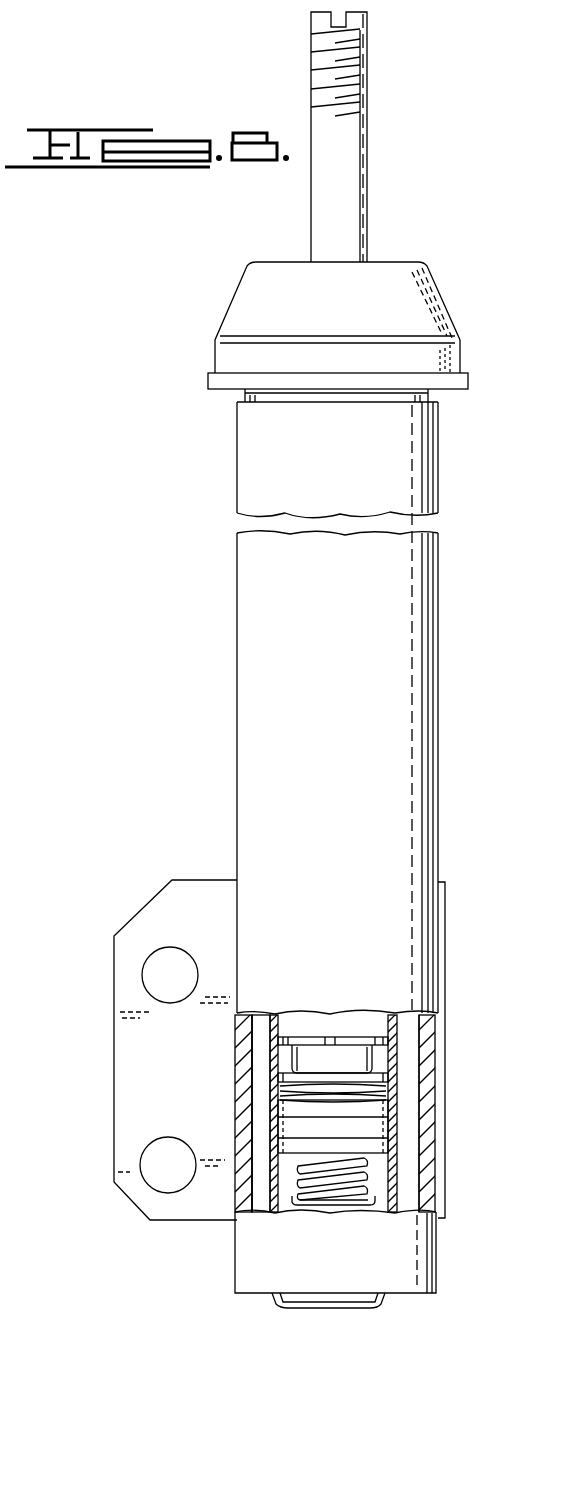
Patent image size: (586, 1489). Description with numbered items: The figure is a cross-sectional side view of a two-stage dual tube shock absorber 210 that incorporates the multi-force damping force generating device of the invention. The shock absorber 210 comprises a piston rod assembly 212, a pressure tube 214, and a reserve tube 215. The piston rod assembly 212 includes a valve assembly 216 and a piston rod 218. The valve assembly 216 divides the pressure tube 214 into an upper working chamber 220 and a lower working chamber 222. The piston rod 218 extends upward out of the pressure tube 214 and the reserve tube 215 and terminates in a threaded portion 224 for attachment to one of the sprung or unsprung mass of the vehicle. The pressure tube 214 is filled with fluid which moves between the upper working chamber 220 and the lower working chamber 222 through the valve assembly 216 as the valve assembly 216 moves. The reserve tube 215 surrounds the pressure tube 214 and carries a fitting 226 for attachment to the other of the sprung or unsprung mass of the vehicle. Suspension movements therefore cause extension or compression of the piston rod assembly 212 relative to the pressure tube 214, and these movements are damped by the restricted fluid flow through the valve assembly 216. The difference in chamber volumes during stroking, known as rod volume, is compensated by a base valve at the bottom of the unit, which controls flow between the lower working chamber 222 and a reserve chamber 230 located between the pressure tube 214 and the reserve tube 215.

The shock absorber 210 is at (188, 368).
The piston rod assembly 212 is at (413, 240).
The pressure tube 214 is at (398, 1061).
The reserve tube 215 is at (430, 1167).
The valve assembly 216 is at (458, 1027).
The piston rod 218 is at (343, 152).
The upper working chamber 220 is at (290, 1020).
The lower working chamber 222 is at (295, 1203).
The threaded portion 224 is at (323, 76).
The fitting 226 is at (170, 890).
The reserve chamber 230 is at (257, 1083).